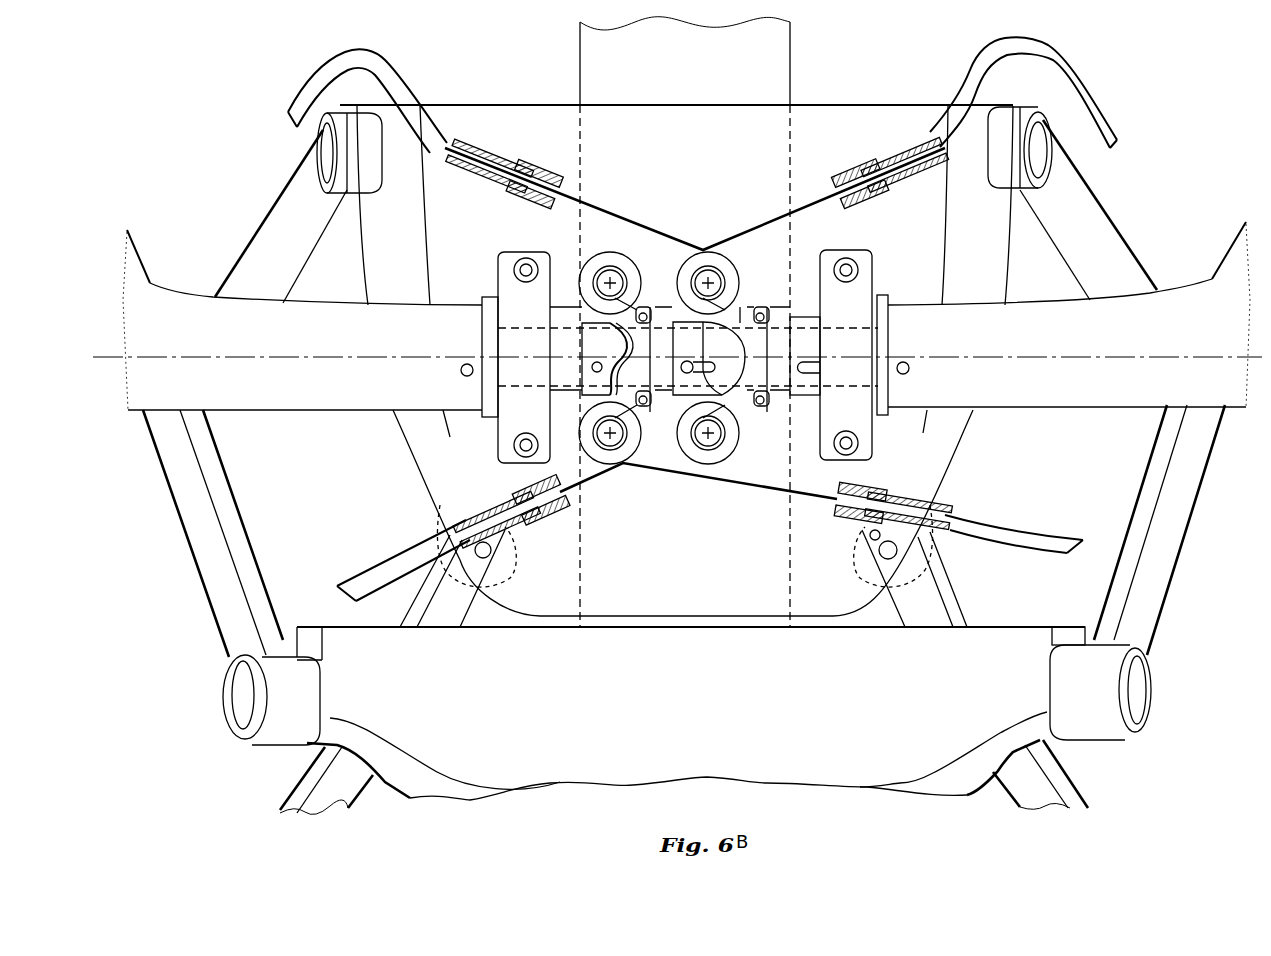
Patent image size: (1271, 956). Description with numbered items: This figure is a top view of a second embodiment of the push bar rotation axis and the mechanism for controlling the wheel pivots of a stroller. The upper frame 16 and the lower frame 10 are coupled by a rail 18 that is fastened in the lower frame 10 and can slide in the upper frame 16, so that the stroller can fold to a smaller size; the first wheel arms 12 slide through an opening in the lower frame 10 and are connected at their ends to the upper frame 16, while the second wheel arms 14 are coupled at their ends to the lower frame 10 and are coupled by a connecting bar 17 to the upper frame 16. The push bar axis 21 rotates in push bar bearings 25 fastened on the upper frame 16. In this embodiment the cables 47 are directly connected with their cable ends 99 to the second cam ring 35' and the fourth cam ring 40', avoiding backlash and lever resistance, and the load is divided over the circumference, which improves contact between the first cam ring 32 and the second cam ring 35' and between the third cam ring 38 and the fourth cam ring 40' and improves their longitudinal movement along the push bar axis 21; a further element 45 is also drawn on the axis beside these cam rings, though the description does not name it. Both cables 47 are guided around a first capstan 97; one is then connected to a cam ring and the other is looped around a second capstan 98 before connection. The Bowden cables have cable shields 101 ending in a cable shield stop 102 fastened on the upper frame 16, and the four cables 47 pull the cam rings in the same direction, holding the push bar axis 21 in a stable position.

The lower frame 10 is at (338, 643).
The first wheel arms 12 is at (292, 790).
The second wheel arms 14 is at (203, 553).
The upper frame 16 is at (418, 445).
The connecting bar 17 is at (300, 175).
The rail 18 is at (582, 52).
The push bar axis 21 is at (185, 298).
The push bar bearings 25 is at (508, 262).
The first cam ring 32 is at (582, 318).
The second cam ring 35' is at (691, 304).
The third cam ring 38 is at (680, 397).
The fourth cam ring 40' is at (739, 392).
The hub 45 is at (802, 317).
The cables 47 is at (562, 193).
The first capstan 97 is at (718, 252).
The second capstan 98 is at (625, 252).
The cable ends 99 is at (658, 303).
The cable shields 101 is at (458, 145).
The cable shield stop 102 is at (532, 518).